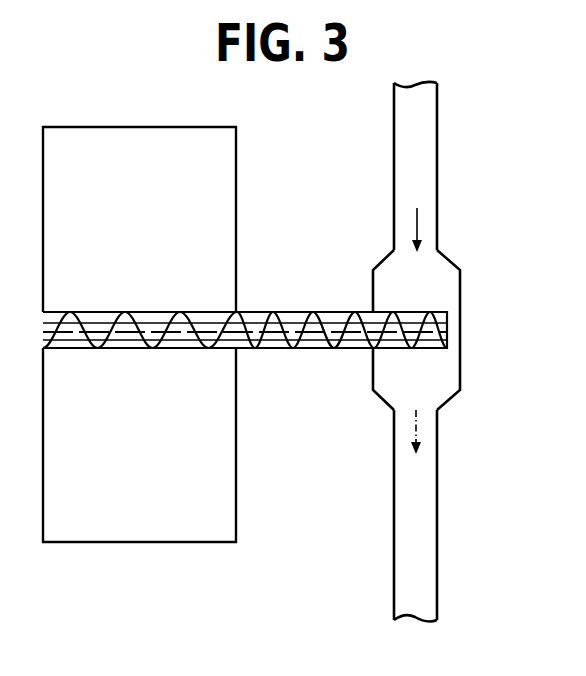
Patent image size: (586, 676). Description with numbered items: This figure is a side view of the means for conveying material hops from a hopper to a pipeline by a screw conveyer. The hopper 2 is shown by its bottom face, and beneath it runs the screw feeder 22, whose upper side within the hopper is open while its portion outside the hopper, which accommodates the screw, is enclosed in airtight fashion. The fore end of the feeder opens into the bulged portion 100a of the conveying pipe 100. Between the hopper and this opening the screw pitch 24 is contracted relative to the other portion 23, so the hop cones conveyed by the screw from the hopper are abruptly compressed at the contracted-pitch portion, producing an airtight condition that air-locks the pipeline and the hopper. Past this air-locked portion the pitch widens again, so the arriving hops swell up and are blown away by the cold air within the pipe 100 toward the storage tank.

The hopper 2 is at (151, 461).
The screw feeder 22 is at (245, 329).
The other portion of screw pitch 23 is at (198, 312).
The screw pitch 24 is at (308, 312).
The conveying pipe 100 is at (427, 166).
The bulged portion 100a is at (446, 306).